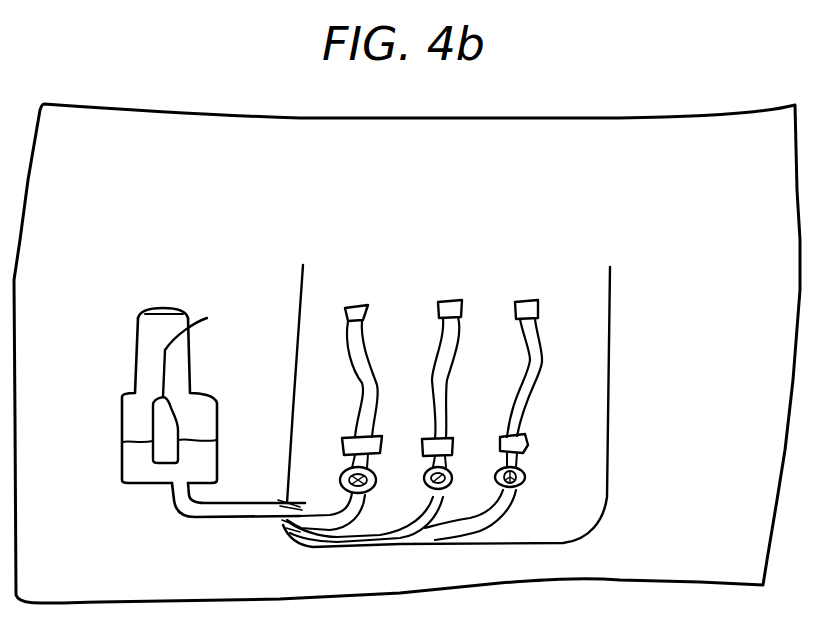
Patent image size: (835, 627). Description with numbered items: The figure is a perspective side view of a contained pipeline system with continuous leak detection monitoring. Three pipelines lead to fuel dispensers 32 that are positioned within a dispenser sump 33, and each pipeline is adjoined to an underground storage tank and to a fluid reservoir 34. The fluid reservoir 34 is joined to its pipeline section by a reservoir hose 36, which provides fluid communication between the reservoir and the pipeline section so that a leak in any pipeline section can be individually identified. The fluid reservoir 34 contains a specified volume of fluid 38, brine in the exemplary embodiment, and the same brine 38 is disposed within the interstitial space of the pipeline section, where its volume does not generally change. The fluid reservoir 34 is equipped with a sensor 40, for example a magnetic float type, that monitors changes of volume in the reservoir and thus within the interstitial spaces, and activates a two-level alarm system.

The fuel dispenser 32 is at (353, 303).
The dispenser sump 33 is at (605, 400).
The fluid reservoir 34 is at (137, 340).
The reservoir hose 36 is at (235, 518).
The fluid 38 is at (137, 463).
The sensor 40 is at (153, 422).